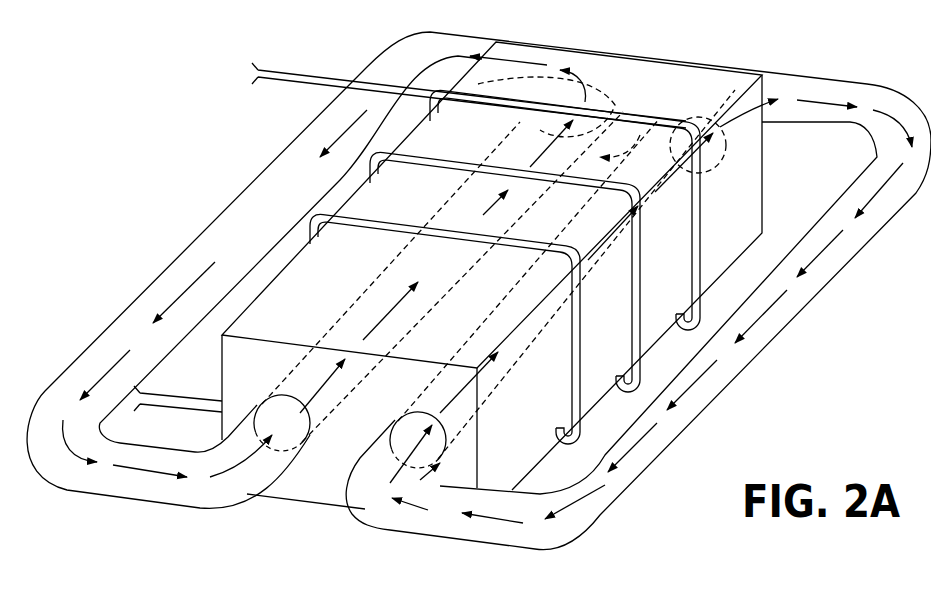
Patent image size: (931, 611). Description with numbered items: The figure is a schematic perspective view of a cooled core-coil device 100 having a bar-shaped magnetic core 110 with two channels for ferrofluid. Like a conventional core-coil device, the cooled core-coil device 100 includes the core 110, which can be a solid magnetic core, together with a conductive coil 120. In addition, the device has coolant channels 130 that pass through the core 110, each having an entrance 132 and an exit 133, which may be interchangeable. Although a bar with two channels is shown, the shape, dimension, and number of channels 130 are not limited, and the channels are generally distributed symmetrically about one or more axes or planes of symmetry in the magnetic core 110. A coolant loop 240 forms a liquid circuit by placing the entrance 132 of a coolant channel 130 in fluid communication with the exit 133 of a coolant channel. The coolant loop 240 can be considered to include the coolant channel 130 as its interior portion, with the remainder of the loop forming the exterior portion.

The cooled core-coil device 100 is at (150, 122).
The core 110 is at (257, 290).
The conductive coil 120 is at (305, 68).
The coolant channel 130 is at (440, 211).
The entrance 132 is at (310, 448).
The exit 133 is at (650, 118).
The coolant loop 240 is at (110, 345).